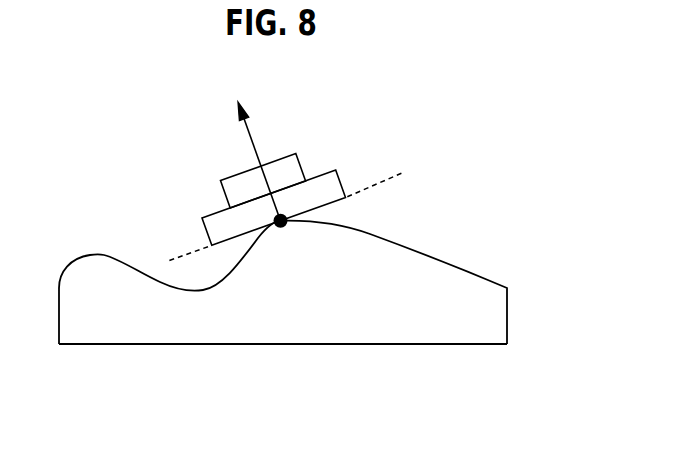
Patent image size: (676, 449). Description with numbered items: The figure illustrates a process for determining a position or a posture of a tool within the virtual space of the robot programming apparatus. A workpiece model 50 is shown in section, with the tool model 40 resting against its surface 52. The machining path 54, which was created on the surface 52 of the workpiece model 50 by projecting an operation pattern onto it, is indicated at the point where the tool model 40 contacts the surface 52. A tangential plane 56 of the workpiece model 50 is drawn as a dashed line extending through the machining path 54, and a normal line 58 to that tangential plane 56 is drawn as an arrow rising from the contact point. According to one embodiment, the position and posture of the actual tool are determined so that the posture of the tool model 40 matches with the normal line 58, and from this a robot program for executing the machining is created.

The tool model 40 is at (328, 170).
The workpiece model 50 is at (103, 253).
The surface 52 is at (440, 253).
The machining path 54 is at (284, 222).
The tangential plane 56 is at (402, 173).
The normal line 58 is at (255, 140).